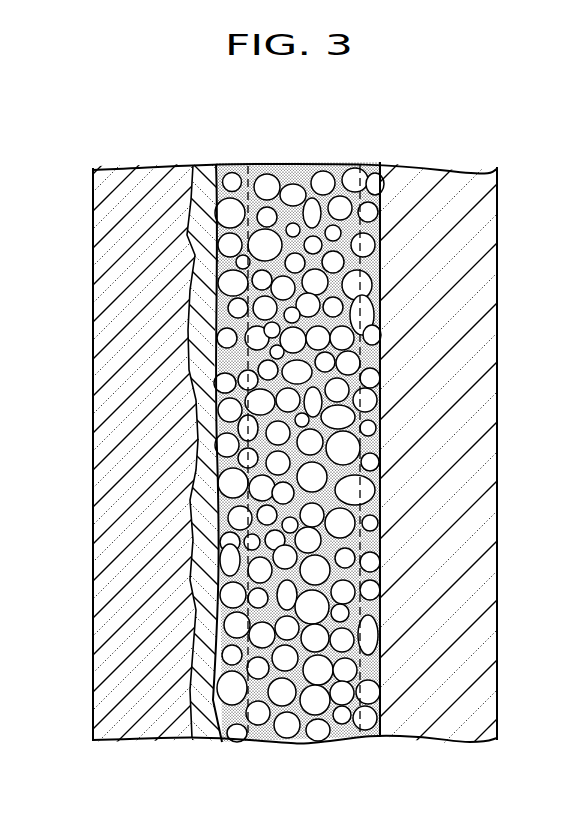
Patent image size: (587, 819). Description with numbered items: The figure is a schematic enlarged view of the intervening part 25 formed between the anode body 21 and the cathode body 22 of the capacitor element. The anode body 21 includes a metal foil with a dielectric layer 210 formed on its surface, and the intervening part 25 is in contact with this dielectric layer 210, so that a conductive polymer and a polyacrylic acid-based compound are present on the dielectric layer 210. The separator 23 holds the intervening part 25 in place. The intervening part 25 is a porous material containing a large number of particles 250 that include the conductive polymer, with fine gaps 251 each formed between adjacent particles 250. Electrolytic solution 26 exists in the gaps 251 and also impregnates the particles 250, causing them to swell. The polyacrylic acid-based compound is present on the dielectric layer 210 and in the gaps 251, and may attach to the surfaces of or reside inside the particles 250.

The anode body 21 is at (93, 450).
The cathode body 22 is at (485, 640).
The separator 23 is at (366, 722).
The intervening part 25 is at (306, 458).
The electrolytic solution 26 is at (264, 733).
The dielectric layer 210 is at (200, 738).
The particles 250 is at (322, 733).
The gaps 251 is at (232, 722).